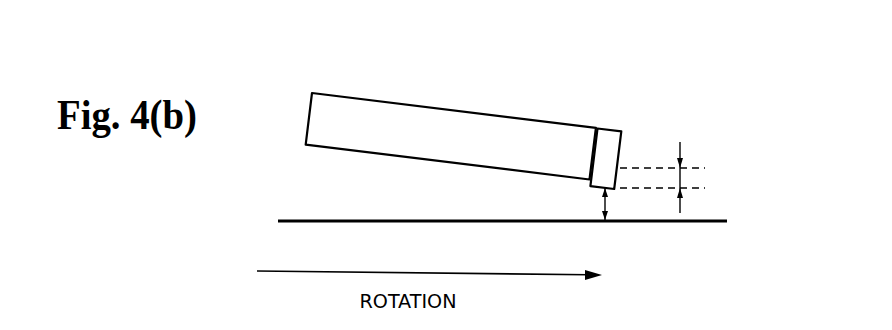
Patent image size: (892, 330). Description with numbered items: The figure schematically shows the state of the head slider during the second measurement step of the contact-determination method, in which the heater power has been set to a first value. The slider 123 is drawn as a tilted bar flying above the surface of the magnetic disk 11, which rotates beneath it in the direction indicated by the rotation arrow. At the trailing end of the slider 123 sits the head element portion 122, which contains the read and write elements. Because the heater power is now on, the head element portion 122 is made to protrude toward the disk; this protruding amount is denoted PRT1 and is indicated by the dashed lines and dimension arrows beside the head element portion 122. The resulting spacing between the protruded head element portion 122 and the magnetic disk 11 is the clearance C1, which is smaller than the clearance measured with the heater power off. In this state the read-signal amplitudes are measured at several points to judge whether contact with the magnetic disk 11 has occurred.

The magnetic disk 11 is at (313, 219).
The head element portion 122 is at (602, 127).
The slider 123 is at (442, 108).
The clearance C1 is at (584, 204).
The protruding amount PRT1 is at (716, 177).